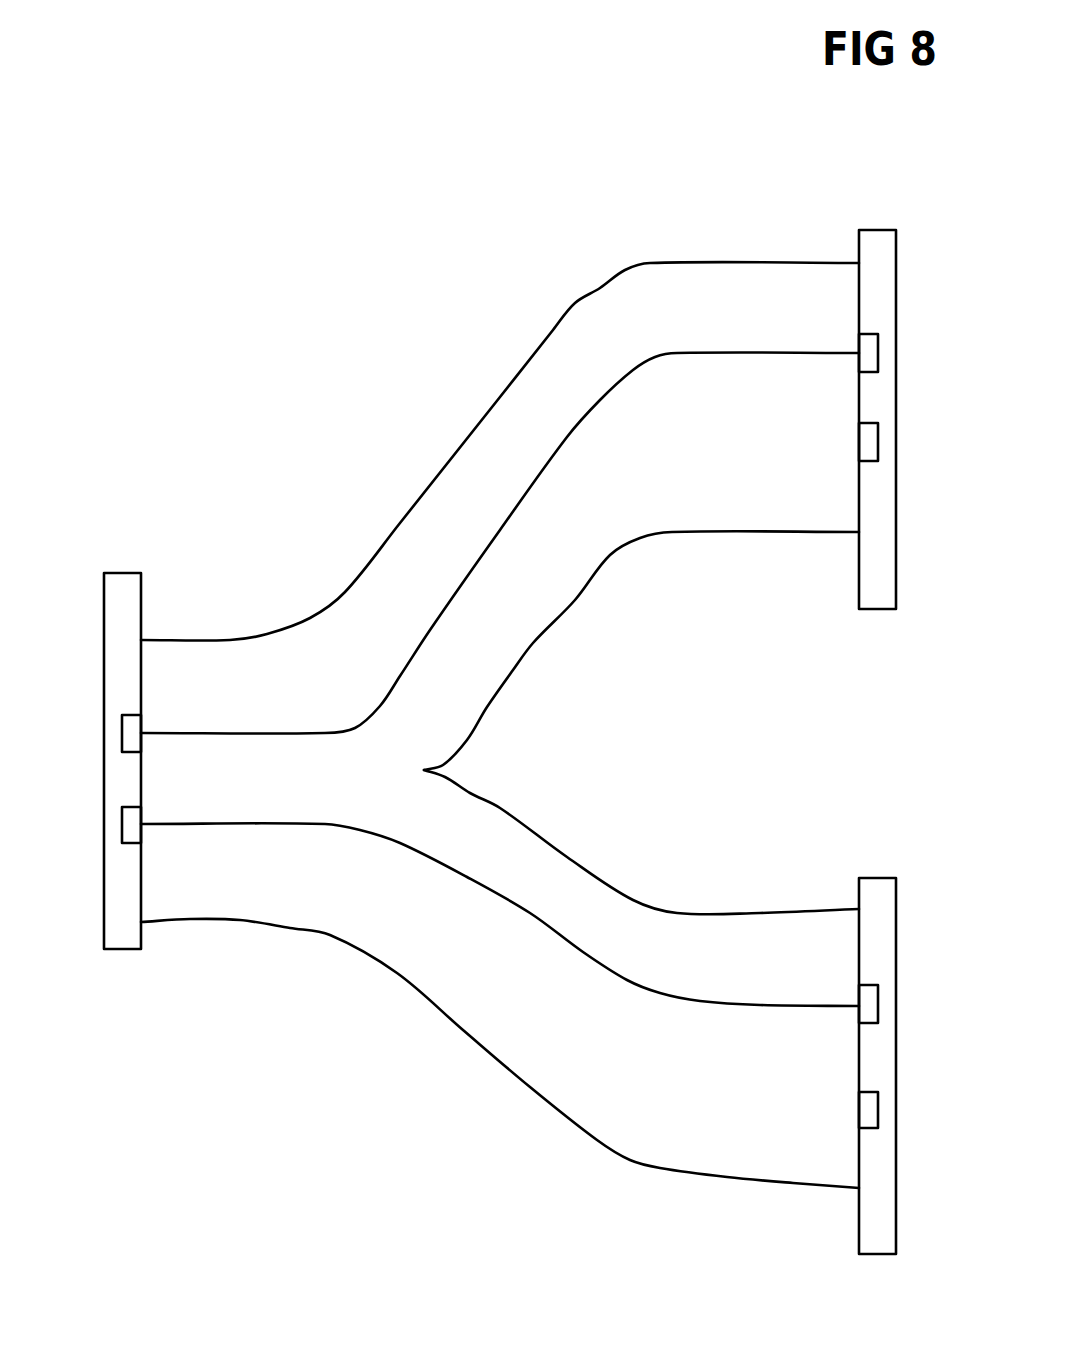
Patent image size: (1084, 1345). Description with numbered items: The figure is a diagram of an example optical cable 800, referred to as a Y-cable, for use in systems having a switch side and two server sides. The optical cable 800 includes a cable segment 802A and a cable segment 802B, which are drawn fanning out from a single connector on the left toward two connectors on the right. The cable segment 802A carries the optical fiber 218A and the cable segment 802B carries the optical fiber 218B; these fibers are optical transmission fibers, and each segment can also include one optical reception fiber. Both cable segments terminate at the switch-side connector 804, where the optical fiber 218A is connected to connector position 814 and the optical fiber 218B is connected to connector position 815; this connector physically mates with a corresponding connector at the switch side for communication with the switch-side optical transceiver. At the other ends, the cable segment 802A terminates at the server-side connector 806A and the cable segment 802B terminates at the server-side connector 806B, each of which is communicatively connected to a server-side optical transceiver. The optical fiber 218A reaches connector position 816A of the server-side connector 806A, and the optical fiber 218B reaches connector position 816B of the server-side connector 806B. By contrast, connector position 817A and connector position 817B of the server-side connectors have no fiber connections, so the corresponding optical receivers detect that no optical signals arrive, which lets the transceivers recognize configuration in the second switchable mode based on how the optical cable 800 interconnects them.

The optical cable 800 is at (156, 188).
The cable segment 802A is at (681, 262).
The cable segment 802B is at (668, 1167).
The optical fiber 218A is at (733, 352).
The optical fiber 218B is at (583, 952).
The switch-side connector 804 is at (103, 608).
The connector position 814 is at (122, 738).
The connector position 815 is at (122, 829).
The server-side connector 806A is at (897, 287).
The server-side connector 806B is at (920, 914).
The connector position 816A is at (878, 357).
The connector position 817A is at (878, 437).
The connector position 816B is at (878, 1004).
The connector position 817B is at (878, 1110).